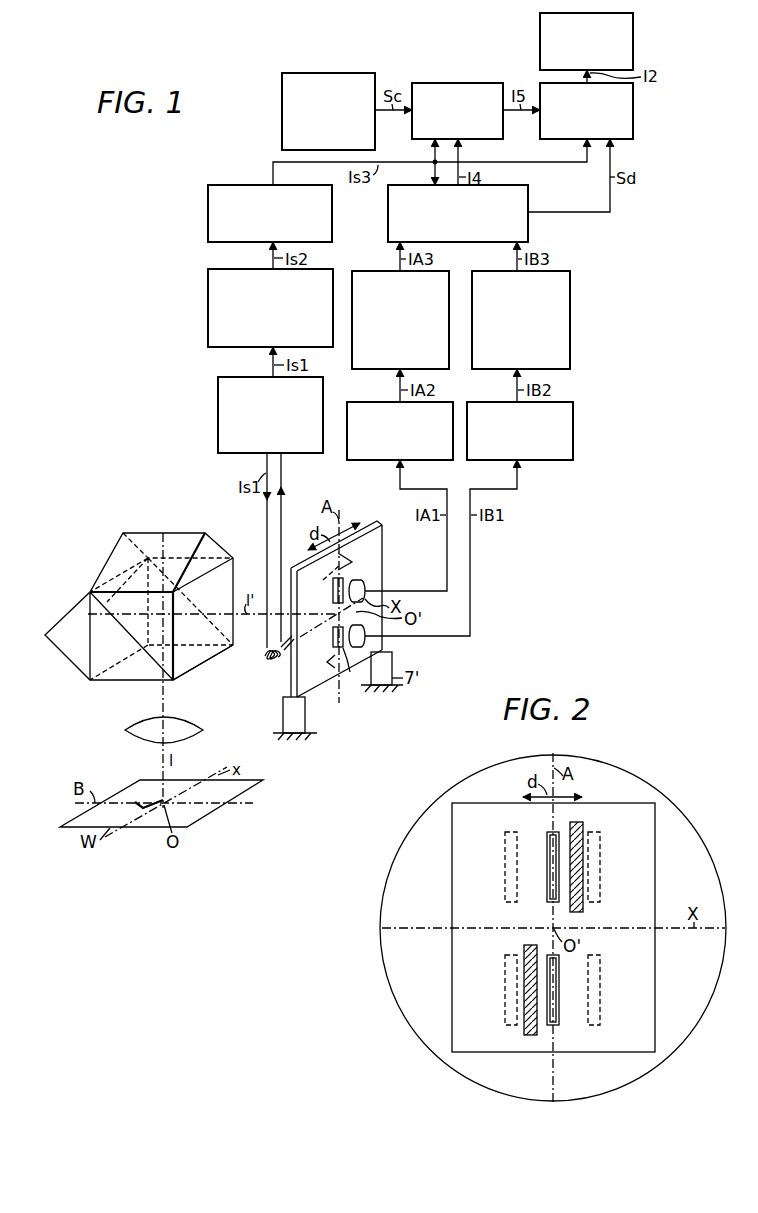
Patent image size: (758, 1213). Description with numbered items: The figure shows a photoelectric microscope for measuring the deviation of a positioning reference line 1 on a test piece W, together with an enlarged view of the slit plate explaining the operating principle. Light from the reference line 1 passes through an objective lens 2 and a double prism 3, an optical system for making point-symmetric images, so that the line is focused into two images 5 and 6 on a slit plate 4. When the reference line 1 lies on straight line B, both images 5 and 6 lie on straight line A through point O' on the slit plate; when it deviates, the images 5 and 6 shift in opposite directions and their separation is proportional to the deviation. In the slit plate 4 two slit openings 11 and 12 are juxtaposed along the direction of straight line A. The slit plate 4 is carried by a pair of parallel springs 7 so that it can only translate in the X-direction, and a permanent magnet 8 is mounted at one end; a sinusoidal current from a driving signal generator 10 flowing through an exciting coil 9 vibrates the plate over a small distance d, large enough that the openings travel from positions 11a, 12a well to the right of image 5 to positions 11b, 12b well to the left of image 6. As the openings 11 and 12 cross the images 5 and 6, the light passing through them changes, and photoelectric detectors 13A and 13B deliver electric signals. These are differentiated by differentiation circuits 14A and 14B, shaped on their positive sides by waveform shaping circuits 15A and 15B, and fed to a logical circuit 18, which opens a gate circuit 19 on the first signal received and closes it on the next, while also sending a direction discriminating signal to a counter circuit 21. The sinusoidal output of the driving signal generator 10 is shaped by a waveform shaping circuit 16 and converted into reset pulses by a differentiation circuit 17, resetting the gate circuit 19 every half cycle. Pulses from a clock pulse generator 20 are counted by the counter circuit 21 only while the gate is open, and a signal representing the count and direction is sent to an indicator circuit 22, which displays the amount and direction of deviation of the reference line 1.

In FIG. 1, the reference line (mark) 1 is at (143, 803).
In FIG. 1, the objective lens 2 is at (195, 724).
In FIG. 1, the optical system (double prism) 3 is at (115, 556).
In FIG. 1, the slit plate 4 is at (302, 566).
In FIG. 2, the slit plate 4 is at (622, 1047).
In FIG. 1, the image 5 is at (333, 597).
In FIG. 2, the image 5 is at (578, 826).
In FIG. 1, the image 6 is at (350, 672).
In FIG. 2, the image 6 is at (530, 1036).
In FIG. 1, the parallel spring 7 is at (305, 718).
In FIG. 1, the permanent magnet 8 is at (289, 653).
In FIG. 1, the exciting coil 9 is at (267, 657).
In FIG. 1, the driving signal generator 10 is at (259, 377).
In FIG. 1, the slit opening 11 is at (345, 578).
In FIG. 2, the slit opening 11 is at (547, 848).
In FIG. 2, the slit opening position 11a is at (600, 836).
In FIG. 2, the slit opening position 11b is at (506, 838).
In FIG. 1, the slit opening 12 is at (332, 631).
In FIG. 2, the slit opening 12 is at (559, 1010).
In FIG. 2, the slit opening position 12a is at (600, 1005).
In FIG. 2, the slit opening position 12b is at (505, 1013).
In FIG. 1, the photoelectric detector 13A is at (366, 581).
In FIG. 1, the photoelectric detector 13B is at (368, 641).
In FIG. 1, the differentiation circuit 14A is at (376, 402).
In FIG. 1, the differentiation circuit 14B is at (495, 402).
In FIG. 1, the waveform shaping circuit 15A is at (393, 271).
In FIG. 1, the waveform shaping circuit 15B is at (513, 271).
In FIG. 1, the waveform shaping circuit 16 is at (257, 269).
In FIG. 1, the differentiation circuit 17 is at (256, 185).
In FIG. 1, the logical circuit 18 is at (528, 194).
In FIG. 1, the gate circuit 19 is at (460, 83).
In FIG. 1, the clock pulse generator 20 is at (332, 73).
In FIG. 1, the counter circuit 21 is at (633, 118).
In FIG. 1, the indicator circuit 22 is at (540, 22).